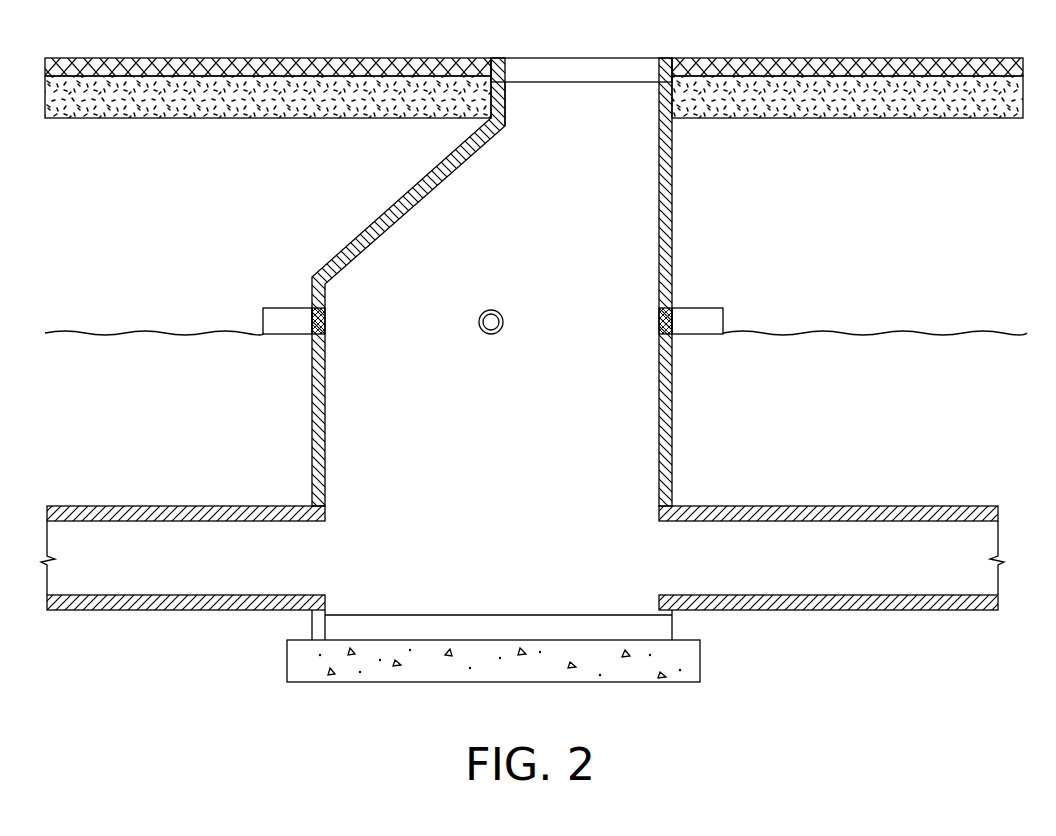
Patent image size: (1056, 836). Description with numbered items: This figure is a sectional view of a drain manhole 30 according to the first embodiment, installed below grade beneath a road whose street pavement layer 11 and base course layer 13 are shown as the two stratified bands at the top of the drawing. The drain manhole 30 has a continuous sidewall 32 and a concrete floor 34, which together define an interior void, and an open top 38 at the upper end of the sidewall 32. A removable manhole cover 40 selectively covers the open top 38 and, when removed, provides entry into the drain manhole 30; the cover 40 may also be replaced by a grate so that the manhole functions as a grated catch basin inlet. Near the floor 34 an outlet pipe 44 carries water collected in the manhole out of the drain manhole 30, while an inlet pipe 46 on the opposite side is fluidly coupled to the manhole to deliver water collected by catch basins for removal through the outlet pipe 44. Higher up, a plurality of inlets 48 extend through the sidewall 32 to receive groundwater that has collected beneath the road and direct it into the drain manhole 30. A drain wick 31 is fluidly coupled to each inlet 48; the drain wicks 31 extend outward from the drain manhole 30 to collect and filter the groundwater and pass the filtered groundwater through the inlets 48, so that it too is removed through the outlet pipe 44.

The street pavement layer 11 is at (833, 66).
The base course layer 13 is at (913, 86).
The drain manhole 30 is at (193, 215).
The drain wick 31 is at (282, 308).
The continuous sidewall 32 is at (377, 217).
The concrete floor 34 is at (701, 663).
The open top 38 is at (505, 70).
The removable manhole cover 40 is at (603, 72).
The outlet pipe 44 is at (122, 610).
The inlet pipe 46 is at (843, 610).
The inlets 48 is at (325, 322).